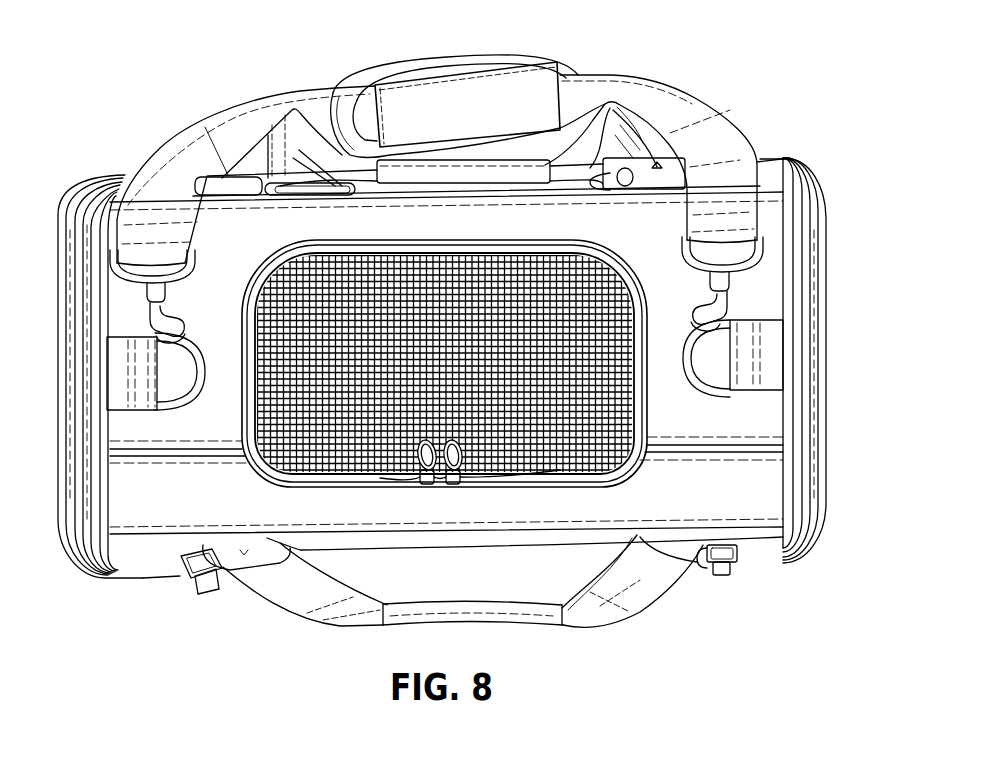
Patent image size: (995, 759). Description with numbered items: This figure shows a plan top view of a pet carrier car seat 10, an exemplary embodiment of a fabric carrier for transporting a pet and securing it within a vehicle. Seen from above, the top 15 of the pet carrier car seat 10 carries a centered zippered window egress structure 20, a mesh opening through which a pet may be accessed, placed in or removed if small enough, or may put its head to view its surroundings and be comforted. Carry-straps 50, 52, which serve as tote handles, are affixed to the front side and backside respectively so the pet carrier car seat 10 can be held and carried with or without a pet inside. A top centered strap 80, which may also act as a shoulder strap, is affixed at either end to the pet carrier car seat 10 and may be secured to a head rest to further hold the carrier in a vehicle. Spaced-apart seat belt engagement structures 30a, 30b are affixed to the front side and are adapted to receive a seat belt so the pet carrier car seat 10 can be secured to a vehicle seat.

The pet carrier car seat 10 is at (817, 131).
The top 15 is at (178, 506).
The zippered window egress structure 20 is at (607, 470).
The seat belt engagement structure 30a is at (194, 584).
The seat belt engagement structure 30b is at (724, 568).
The carry-strap 50 is at (637, 620).
The carry-strap 52 is at (633, 137).
The top centered strap 80 is at (711, 107).